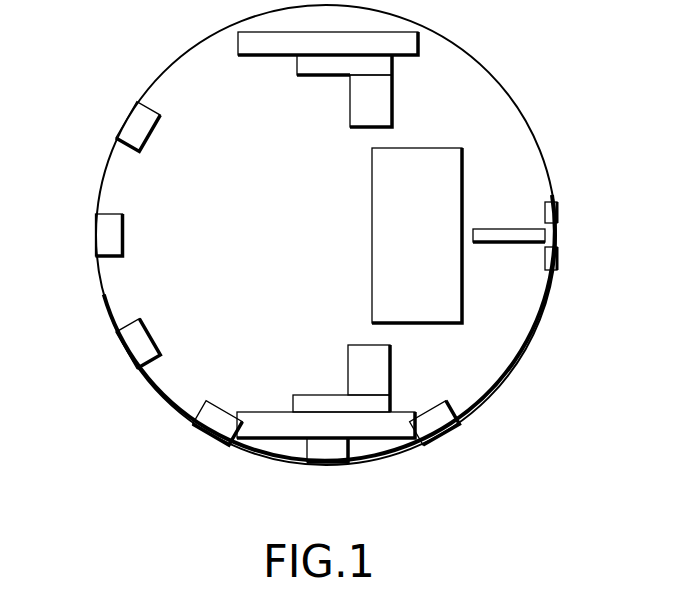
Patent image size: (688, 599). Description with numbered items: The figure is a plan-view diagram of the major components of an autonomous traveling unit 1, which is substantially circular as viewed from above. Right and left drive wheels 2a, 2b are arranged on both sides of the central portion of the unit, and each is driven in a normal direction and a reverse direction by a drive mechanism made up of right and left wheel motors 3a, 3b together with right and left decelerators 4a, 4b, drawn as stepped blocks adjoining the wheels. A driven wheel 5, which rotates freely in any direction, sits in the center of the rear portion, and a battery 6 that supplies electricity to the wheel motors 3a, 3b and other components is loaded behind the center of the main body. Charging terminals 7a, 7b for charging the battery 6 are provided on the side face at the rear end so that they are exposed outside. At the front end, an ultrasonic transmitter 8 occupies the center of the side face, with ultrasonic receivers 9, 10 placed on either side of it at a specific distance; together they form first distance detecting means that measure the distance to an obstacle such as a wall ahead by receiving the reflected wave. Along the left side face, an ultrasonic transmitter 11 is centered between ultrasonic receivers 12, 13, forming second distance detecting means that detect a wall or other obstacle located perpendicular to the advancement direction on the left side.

The autonomous traveling unit 1 is at (497, 72).
The right drive wheel 2a is at (255, 433).
The left drive wheel 2b is at (253, 46).
The right wheel motor 3a is at (356, 368).
The left wheel motor 3b is at (350, 115).
The right decelerator 4a is at (320, 400).
The left decelerator 4b is at (300, 66).
The driven wheel 5 is at (497, 232).
The battery 6 is at (380, 228).
The charging terminal 7a is at (558, 258).
The charging terminal 7b is at (558, 210).
The ultrasonic transmitter 8 is at (105, 236).
The ultrasonic receiver 9 is at (130, 340).
The ultrasonic receiver 10 is at (139, 121).
The ultrasonic transmitter 11 is at (328, 455).
The ultrasonic receiver 12 is at (438, 420).
The ultrasonic receiver 13 is at (215, 425).